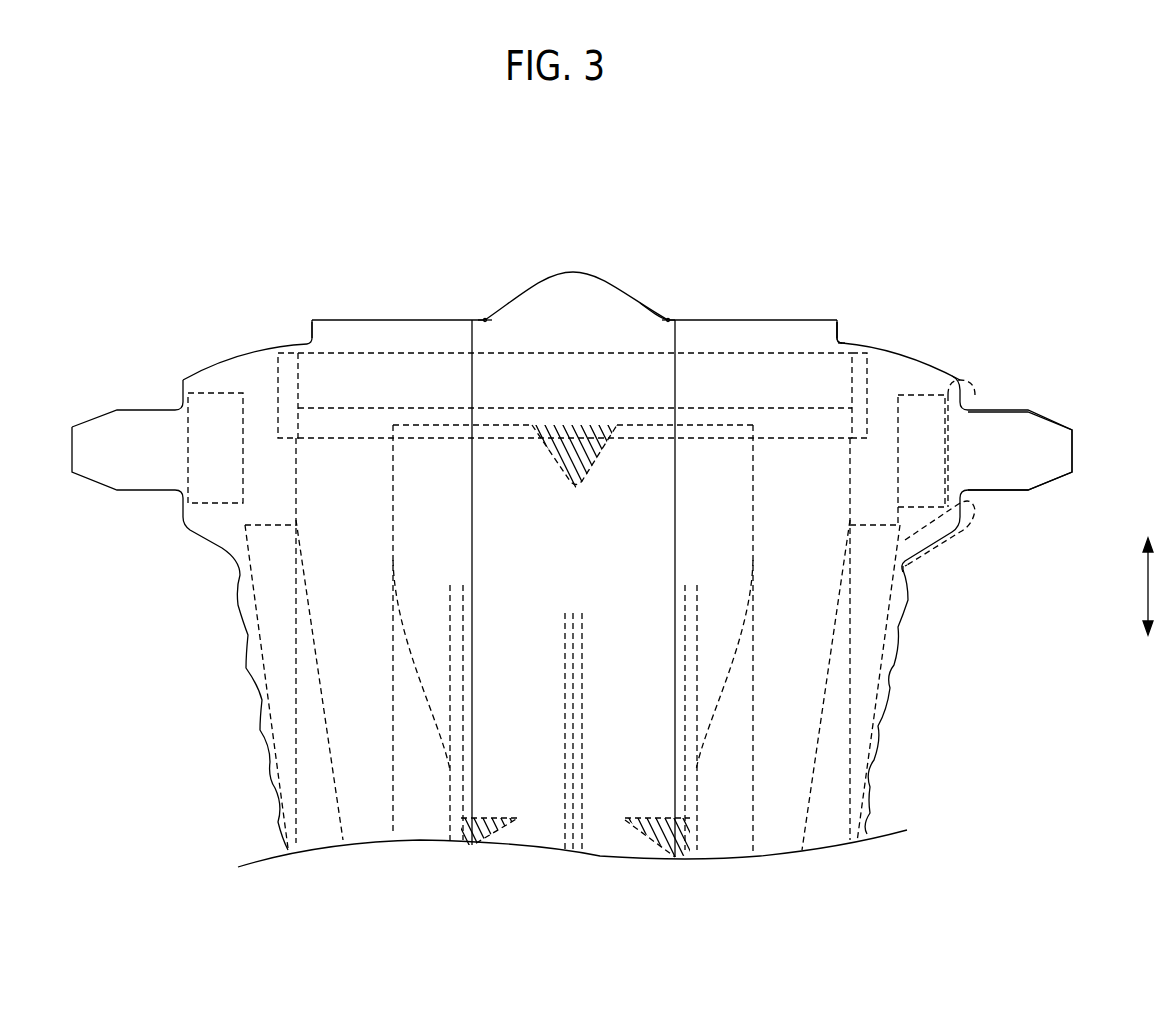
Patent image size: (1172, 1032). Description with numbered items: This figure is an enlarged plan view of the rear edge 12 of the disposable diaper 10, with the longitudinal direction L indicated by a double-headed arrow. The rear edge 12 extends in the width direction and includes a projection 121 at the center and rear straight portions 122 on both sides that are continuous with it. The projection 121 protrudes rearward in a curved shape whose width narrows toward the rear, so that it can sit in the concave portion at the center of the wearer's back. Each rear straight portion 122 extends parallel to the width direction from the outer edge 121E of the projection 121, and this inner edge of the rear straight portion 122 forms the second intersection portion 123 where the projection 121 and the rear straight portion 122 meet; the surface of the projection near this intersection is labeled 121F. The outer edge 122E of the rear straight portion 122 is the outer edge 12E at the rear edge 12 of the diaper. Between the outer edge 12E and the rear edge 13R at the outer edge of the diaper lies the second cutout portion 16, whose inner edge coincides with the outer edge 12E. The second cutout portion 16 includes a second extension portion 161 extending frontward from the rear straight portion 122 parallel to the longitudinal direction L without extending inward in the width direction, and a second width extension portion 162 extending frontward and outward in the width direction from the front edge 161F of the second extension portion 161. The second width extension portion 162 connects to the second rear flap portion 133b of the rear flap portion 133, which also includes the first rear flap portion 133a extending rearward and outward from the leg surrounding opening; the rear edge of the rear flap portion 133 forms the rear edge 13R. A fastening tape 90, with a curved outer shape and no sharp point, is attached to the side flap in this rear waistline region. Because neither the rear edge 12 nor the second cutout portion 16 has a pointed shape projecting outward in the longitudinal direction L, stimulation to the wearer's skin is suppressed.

The disposable diaper 10 is at (1006, 293).
The rear edge 12 is at (768, 312).
The outer edge 12E is at (308, 320).
The second cutout portion 16 is at (192, 354).
The fastening tape 90 is at (1053, 420).
The projection 121 is at (593, 270).
The outer edge of the projection 121E is at (485, 320).
The surface of protruding portion 121F is at (672, 320).
The rear straight portion 122 is at (388, 320).
The outer edge of the rear straight portion 122E is at (600, 276).
The second intersection portion 123 is at (600, 221).
The rear flap portion 133 is at (971, 531).
The first rear flap portion 133a is at (930, 558).
The second rear flap portion 133b is at (973, 393).
The rear edge at the outer edge 13R is at (967, 377).
The second extension portion 161 is at (843, 332).
The front edge of the second extension portion 161F is at (843, 345).
The second width extension portion 162 is at (910, 352).
The longitudinal direction L is at (1157, 586).